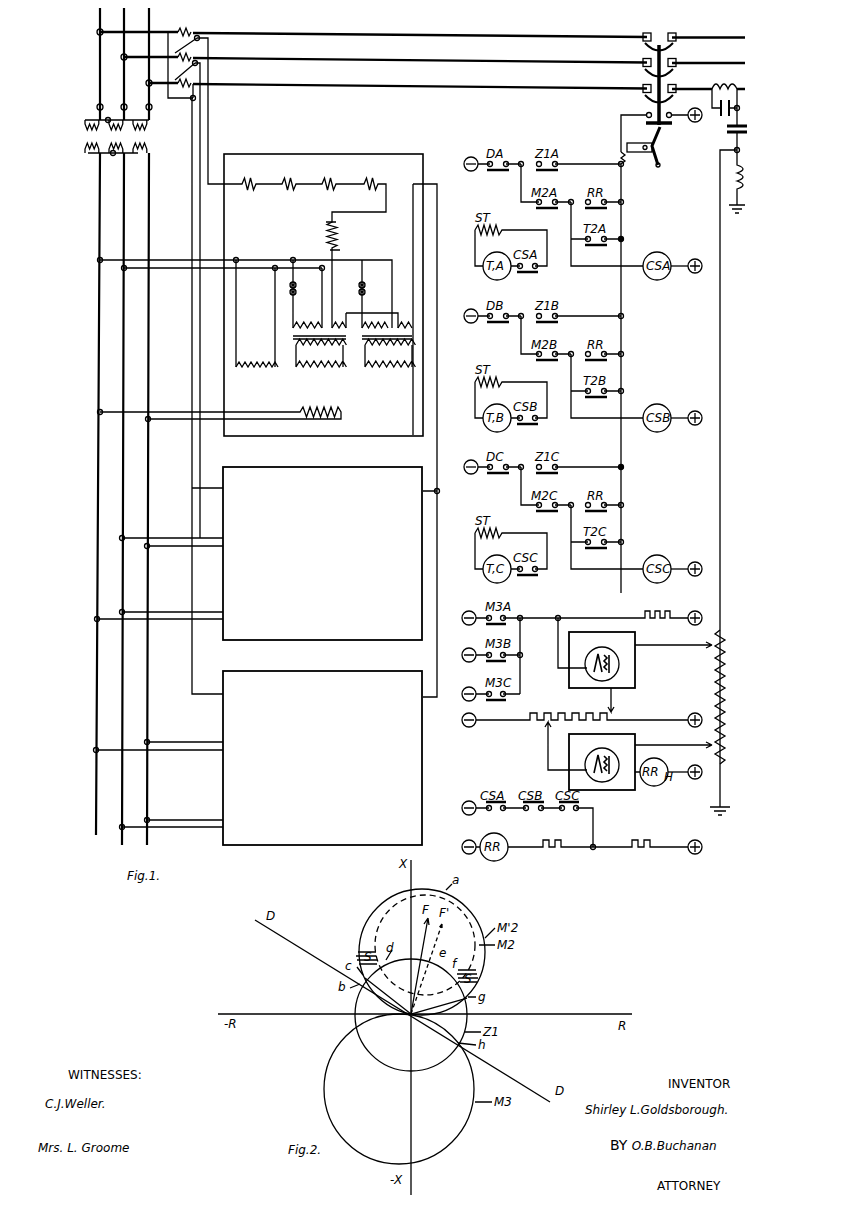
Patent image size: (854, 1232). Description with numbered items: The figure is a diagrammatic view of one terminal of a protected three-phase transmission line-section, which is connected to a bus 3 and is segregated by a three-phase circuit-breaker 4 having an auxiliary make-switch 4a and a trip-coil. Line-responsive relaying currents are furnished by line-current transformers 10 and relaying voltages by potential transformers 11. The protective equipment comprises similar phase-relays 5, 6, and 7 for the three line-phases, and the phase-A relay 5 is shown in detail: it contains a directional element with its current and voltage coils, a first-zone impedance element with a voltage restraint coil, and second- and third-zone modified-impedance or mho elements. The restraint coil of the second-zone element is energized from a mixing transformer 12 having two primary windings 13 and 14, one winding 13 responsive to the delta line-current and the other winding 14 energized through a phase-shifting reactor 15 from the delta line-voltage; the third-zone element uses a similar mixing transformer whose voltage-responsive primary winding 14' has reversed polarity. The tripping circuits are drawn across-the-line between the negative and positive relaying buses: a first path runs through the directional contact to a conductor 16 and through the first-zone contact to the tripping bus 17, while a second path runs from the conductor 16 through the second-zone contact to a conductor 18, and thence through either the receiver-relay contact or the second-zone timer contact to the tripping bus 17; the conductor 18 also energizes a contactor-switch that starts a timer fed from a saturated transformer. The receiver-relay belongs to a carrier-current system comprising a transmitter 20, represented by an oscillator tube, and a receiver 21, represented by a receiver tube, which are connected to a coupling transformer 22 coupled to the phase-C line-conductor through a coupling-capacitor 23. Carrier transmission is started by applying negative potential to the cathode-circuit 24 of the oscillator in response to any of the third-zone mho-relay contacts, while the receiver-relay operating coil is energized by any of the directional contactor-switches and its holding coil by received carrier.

The bus 3 is at (152, 26).
The line-current transformers 10 is at (196, 33).
The potential transformers 11 is at (147, 133).
The phase-A relay 5 is at (388, 154).
The phase-B relay 6 is at (384, 468).
The phase-C relay 7 is at (384, 672).
The three-phase line-segregating circuit-breaker 4 is at (659, 36).
The auxiliary make-switch 4a is at (646, 112).
The conductor 16 is at (521, 161).
The tripping bus 17 is at (624, 168).
The conductor 18 is at (571, 199).
The reactor 15 is at (296, 297).
The primary winding 14 is at (319, 311).
The primary winding 13 is at (333, 326).
The voltage-responsive primary winding 14' is at (373, 303).
The mixing transformer 12 is at (296, 337).
The coupling-capacitor 23 is at (727, 130).
The transmitter 20 is at (636, 664).
The receiver 21 is at (636, 742).
The coupling transformer 22 is at (717, 678).
The cathode-circuit 24 is at (560, 611).